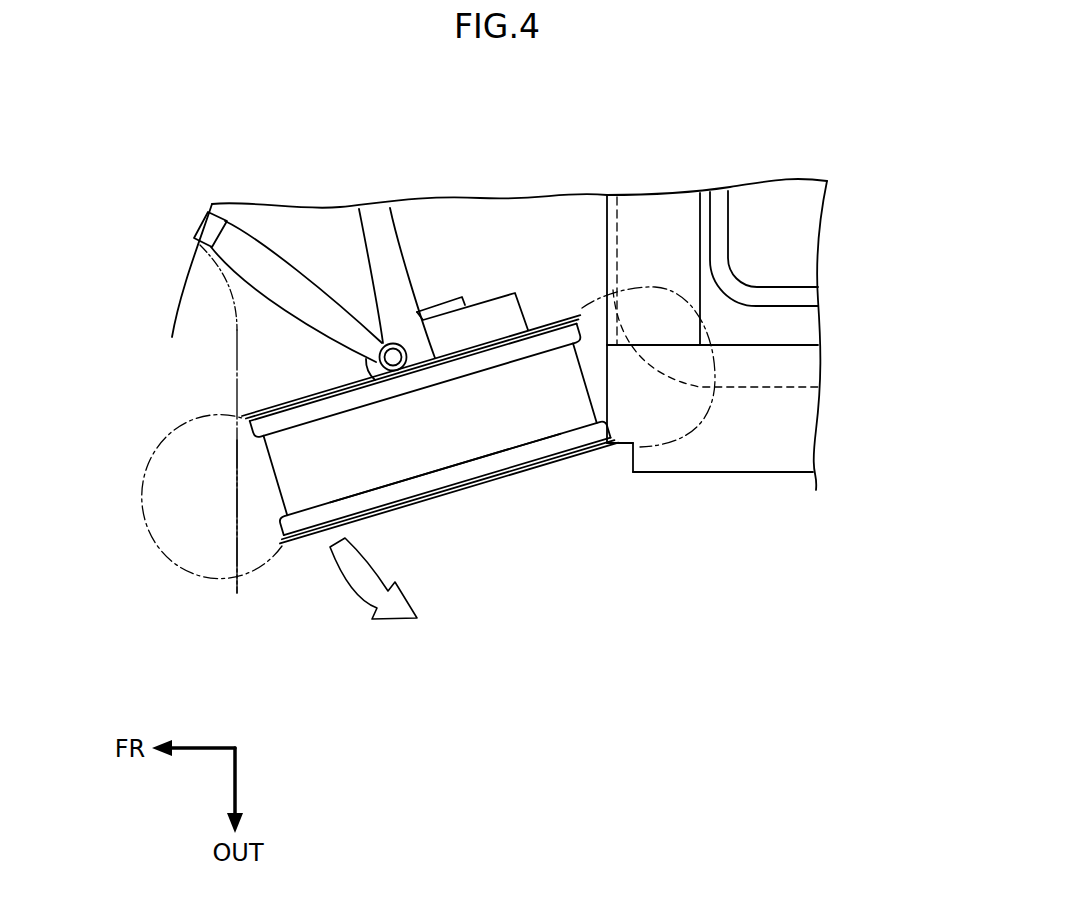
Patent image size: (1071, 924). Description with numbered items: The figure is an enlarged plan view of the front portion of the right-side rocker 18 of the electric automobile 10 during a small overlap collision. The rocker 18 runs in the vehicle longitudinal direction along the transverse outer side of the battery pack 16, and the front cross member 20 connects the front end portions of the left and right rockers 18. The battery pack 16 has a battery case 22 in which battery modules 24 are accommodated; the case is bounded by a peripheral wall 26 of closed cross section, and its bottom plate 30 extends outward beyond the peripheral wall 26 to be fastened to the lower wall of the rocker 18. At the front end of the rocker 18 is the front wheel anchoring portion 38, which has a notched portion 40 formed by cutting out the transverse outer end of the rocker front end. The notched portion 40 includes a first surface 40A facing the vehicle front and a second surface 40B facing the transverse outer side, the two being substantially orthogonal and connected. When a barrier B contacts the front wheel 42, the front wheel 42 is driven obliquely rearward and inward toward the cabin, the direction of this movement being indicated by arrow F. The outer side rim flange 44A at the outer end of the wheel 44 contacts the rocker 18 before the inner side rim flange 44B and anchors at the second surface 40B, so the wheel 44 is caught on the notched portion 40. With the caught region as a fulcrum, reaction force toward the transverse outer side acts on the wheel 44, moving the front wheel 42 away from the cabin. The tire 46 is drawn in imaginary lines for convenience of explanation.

The electric automobile 10 is at (714, 640).
The battery pack 16 is at (723, 184).
The rocker 18 is at (793, 473).
The front cross member 20 is at (607, 230).
The battery case 22 is at (795, 391).
The battery module 24 is at (758, 195).
The peripheral wall 26 is at (697, 226).
The bottom plate 30 is at (653, 210).
The front wheel anchoring portion 38 is at (617, 509).
The notched portion 40 is at (628, 460).
The first surface 40A is at (633, 473).
The second surface 40B is at (620, 448).
The front wheel 42 is at (424, 528).
The wheel 44 is at (275, 404).
The outer side rim flange 44A is at (288, 549).
The inner side rim flange 44B is at (556, 320).
The tire 46 is at (158, 442).
The barrier B is at (237, 593).
The load direction F is at (373, 578).